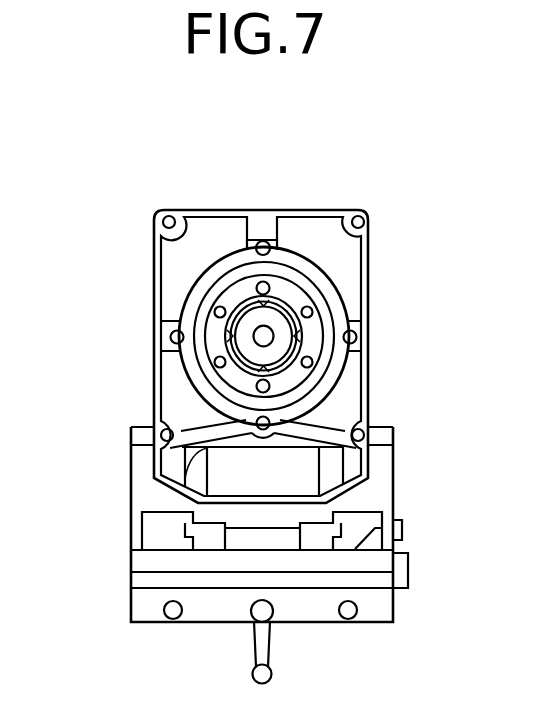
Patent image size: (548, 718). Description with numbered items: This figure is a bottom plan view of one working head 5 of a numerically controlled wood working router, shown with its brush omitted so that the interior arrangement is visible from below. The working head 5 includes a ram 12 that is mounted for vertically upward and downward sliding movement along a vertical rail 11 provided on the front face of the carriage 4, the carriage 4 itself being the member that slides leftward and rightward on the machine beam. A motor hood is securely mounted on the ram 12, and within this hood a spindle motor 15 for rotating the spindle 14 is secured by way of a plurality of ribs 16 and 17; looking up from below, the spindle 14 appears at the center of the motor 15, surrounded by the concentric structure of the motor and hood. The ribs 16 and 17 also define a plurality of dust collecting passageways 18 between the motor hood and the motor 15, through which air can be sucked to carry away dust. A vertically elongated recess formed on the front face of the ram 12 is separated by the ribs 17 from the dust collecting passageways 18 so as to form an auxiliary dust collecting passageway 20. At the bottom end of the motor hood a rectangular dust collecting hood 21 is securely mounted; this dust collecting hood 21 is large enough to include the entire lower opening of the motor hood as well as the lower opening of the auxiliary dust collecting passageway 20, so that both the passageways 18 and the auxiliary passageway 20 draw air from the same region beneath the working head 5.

The carriage 4 is at (243, 558).
The working head 5 is at (148, 326).
The vertical rail 11 is at (212, 538).
The ram 12 is at (383, 476).
The spindle 14 is at (248, 343).
The spindle motor 15 is at (332, 278).
The ribs 16 is at (273, 226).
The ribs 17 is at (185, 470).
The dust collecting passageways 18 is at (183, 253).
The auxiliary dust collecting passageway 20 is at (262, 478).
The dust collecting hood 21 is at (207, 209).